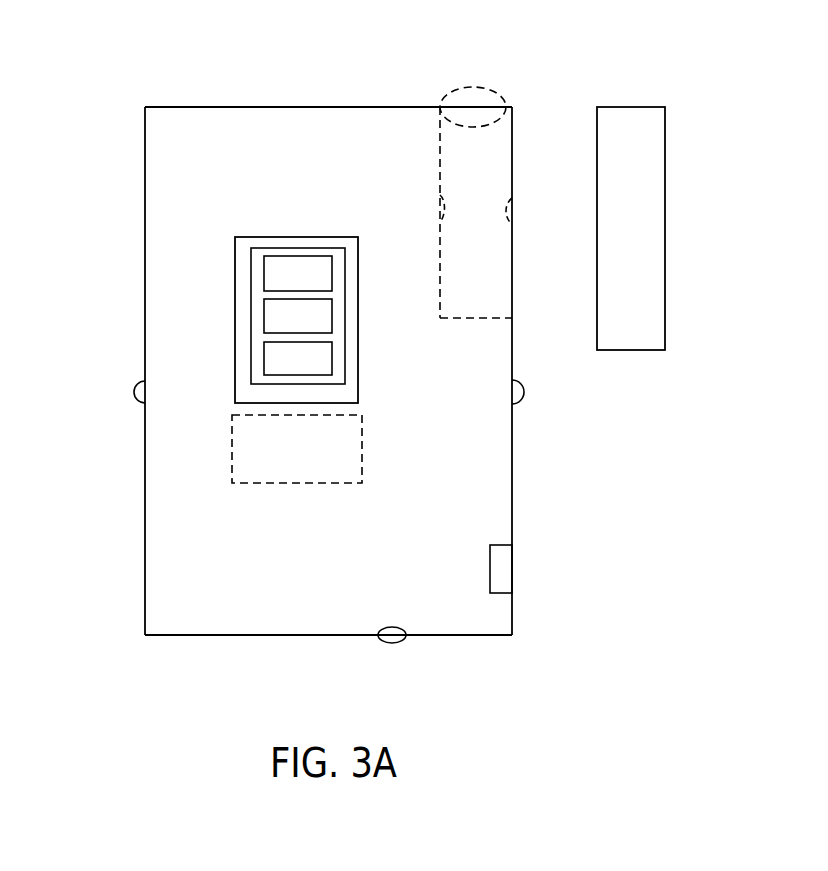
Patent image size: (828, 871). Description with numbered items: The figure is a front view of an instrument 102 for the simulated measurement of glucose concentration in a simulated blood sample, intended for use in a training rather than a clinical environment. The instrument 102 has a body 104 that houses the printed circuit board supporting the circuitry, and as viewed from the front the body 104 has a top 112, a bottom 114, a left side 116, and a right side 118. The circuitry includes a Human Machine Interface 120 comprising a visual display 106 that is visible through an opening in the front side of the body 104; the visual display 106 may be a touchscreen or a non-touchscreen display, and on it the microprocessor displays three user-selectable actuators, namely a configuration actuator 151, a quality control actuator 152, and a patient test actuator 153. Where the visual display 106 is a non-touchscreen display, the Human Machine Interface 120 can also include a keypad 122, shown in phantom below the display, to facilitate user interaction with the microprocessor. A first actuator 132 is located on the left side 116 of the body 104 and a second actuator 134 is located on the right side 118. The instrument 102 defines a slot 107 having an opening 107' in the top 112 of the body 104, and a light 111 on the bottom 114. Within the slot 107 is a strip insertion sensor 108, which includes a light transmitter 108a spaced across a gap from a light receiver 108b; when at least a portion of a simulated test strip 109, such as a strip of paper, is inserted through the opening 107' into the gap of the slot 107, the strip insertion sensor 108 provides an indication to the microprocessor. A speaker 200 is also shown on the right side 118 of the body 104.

The instrument 102 is at (114, 80).
The body 104 is at (128, 196).
The visual display 106 is at (235, 328).
The slot 107 is at (484, 83).
The opening 107' is at (453, 62).
The strip insertion sensor 108 is at (475, 212).
The light transmitter 108a is at (437, 208).
The light receiver 108b is at (513, 212).
The simulated test strip 109 is at (666, 222).
The light 111 is at (393, 641).
The top 112 is at (295, 104).
The bottom 114 is at (300, 640).
The left side 116 is at (142, 433).
The right side 118 is at (518, 445).
The Human Machine Interface 120 is at (206, 250).
The keypad 122 is at (365, 443).
The first actuator 132 is at (134, 391).
The second actuator 134 is at (524, 395).
The configuration actuator 151 is at (333, 288).
The quality control actuator 152 is at (333, 318).
The patient test actuator 153 is at (333, 356).
The speaker 200 is at (514, 568).